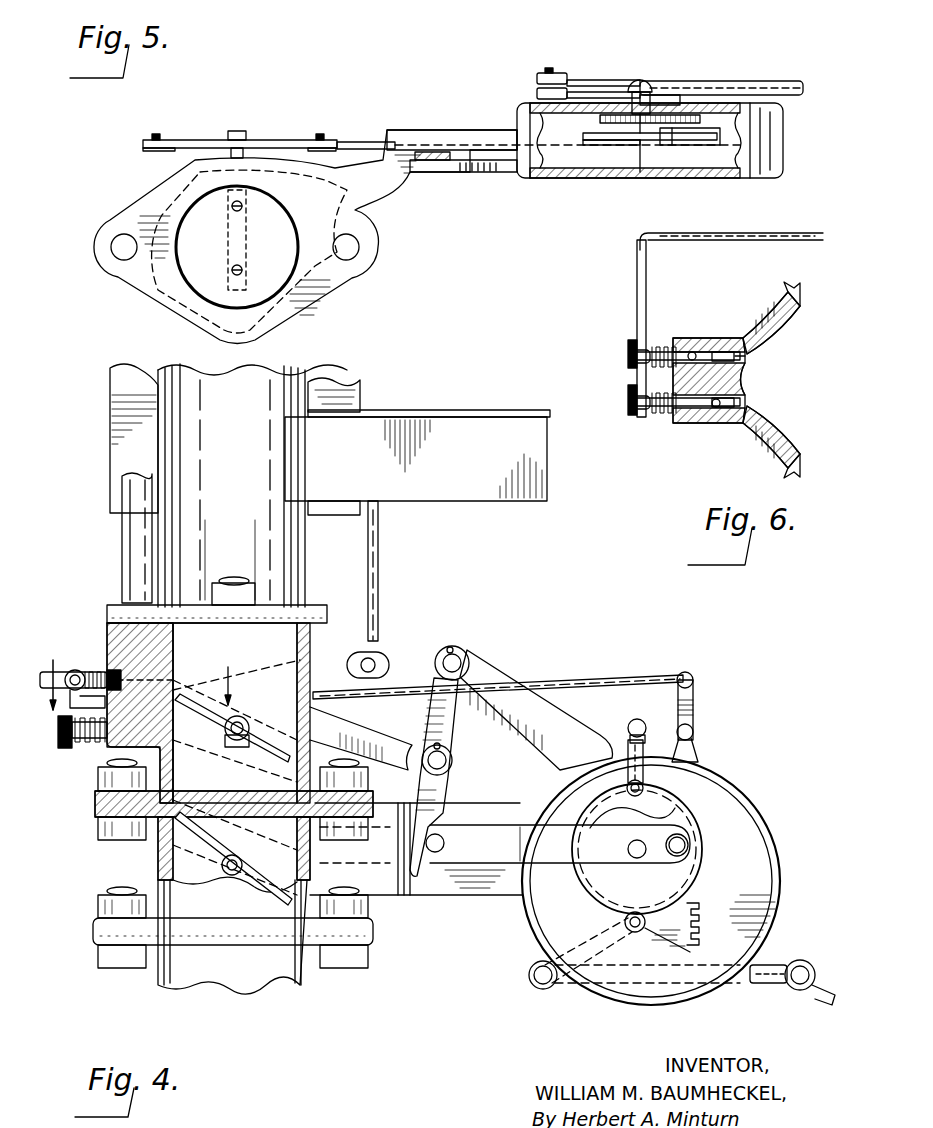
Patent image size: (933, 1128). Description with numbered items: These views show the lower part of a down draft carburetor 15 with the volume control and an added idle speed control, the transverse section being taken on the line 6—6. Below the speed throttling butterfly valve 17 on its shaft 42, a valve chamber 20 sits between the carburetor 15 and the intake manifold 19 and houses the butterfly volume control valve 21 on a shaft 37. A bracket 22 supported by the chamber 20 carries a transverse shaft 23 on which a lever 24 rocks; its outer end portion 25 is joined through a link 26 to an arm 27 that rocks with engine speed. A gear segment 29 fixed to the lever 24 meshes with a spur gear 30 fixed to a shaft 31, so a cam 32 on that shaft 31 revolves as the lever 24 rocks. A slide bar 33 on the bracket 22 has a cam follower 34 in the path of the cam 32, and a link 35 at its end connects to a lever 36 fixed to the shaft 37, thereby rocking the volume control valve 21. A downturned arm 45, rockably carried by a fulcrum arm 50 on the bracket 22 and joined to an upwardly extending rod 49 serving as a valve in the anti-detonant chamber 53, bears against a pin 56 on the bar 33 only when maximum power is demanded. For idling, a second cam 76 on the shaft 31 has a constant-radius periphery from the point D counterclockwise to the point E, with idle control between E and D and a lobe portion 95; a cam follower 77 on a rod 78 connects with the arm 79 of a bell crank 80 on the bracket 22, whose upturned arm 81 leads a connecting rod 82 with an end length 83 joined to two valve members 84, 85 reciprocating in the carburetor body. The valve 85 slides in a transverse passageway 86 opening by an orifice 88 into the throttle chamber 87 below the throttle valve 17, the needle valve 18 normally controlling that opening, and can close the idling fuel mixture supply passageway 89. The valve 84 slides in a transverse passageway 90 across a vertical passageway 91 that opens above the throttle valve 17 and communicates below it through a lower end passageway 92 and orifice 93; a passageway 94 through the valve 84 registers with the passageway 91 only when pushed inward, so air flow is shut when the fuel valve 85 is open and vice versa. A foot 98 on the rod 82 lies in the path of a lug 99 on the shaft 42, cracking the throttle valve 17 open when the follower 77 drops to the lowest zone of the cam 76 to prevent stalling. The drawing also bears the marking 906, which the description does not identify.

In FIG. 4, the section line 6 is at (50, 675).
In FIG. 4, the down draft carburetor 15 is at (305, 560).
In FIG. 4, the speed throttling control butterfly valve 17 is at (284, 765).
In FIG. 6, the low speed and idling control adjustable needle valve 18 is at (628, 362).
In FIG. 4, the low speed and idling control adjustable needle valve 18 is at (60, 748).
In FIG. 4, the intake manifold 19 is at (230, 962).
In FIG. 5, the valve chamber 20 is at (270, 292).
In FIG. 4, the valve chamber 20 is at (170, 860).
In FIG. 5, the volume control valve 21 is at (198, 272).
In FIG. 4, the volume control valve 21 is at (270, 880).
In FIG. 5, the bracket 22 is at (567, 178).
In FIG. 4, the bracket 22 is at (490, 895).
In FIG. 5, the shaft 23 is at (642, 80).
In FIG. 4, the shaft 23 is at (632, 933).
In FIG. 5, the lever 24 is at (605, 80).
In FIG. 4, the lever 24 is at (545, 958).
In FIG. 5, the outer end portion 25 is at (537, 78).
In FIG. 4, the outer end portion 25 is at (530, 982).
In FIG. 5, the link 26 is at (760, 81).
In FIG. 4, the link 26 is at (770, 965).
In FIG. 4, the arm 27 is at (820, 998).
In FIG. 5, the gear segment 29 is at (690, 105).
In FIG. 4, the gear segment 29 is at (700, 935).
In FIG. 5, the spur gear 30 is at (660, 115).
In FIG. 5, the shaft 31 is at (650, 90).
In FIG. 5, the cam 32 is at (583, 136).
In FIG. 4, the cam 32 is at (718, 876).
In FIG. 5, the slide bar 33 is at (380, 122).
In FIG. 5, the cam follower 34 is at (680, 140).
In FIG. 5, the link 35 is at (272, 140).
In FIG. 5, the lever 36 is at (190, 148).
In FIG. 5, the shaft 37 is at (240, 131).
In FIG. 4, the shaft 42 is at (240, 716).
In FIG. 5, the arm 45 is at (425, 150).
In FIG. 4, the rod 49 is at (378, 572).
In FIG. 4, the fulcrum arm 50 is at (530, 722).
In FIG. 4, the chamber 53 is at (470, 490).
In FIG. 5, the pin 56 is at (445, 160).
In FIG. 4, the idle speed control cam 76 is at (690, 818).
In FIG. 4, the cam follower 77 is at (643, 770).
In FIG. 4, the rod 78 is at (627, 786).
In FIG. 4, the arm 79 is at (650, 710).
In FIG. 4, the bell crank 80 is at (693, 720).
In FIG. 4, the upturned arm 81 is at (693, 693).
In FIG. 6, the connecting rod 82 is at (712, 240).
In FIG. 4, the connecting rod 82 is at (603, 677).
In FIG. 6, the end length 83 is at (637, 292).
In FIG. 6, the valve member 84 is at (632, 356).
In FIG. 4, the valve member 84 is at (75, 670).
In FIG. 6, the valve member 85 is at (632, 402).
In FIG. 4, the valve member 85 is at (89, 730).
In FIG. 6, the transverse passageway 86 is at (722, 404).
In FIG. 6, the throttle chamber 87 is at (790, 435).
In FIG. 6, the orifice 88 is at (730, 398).
In FIG. 6, the fuel mixture supply passageway 89 is at (707, 423).
In FIG. 6, the transverse passageway 90 is at (724, 352).
In FIG. 6, the vertically disposed passageway 91 is at (700, 345).
In FIG. 4, the vertically disposed passageway 91 is at (173, 640).
In FIG. 4, the transverse lower end passageway 92 is at (173, 740).
In FIG. 6, the orifice 93 is at (745, 356).
In FIG. 4, the orifice 93 is at (173, 735).
In FIG. 6, the transverse passageway 94 is at (692, 351).
In FIG. 4, the transverse passageway 94 is at (100, 668).
In FIG. 4, the lobe portion 95 is at (620, 800).
In FIG. 4, the foot 98 is at (247, 745).
In FIG. 4, the lug 99 is at (233, 745).
In FIG. 4, the arrow indicator 906 is at (185, 668).
In FIG. 4, the point D is at (600, 790).
In FIG. 4, the point E is at (648, 792).